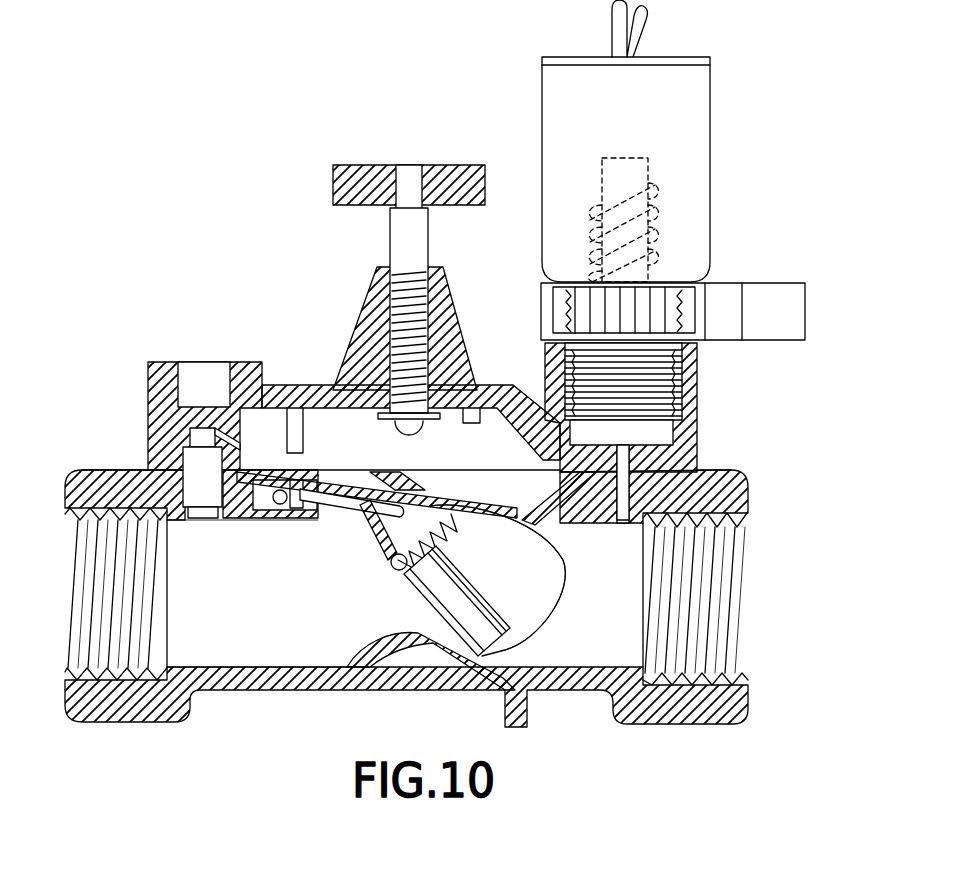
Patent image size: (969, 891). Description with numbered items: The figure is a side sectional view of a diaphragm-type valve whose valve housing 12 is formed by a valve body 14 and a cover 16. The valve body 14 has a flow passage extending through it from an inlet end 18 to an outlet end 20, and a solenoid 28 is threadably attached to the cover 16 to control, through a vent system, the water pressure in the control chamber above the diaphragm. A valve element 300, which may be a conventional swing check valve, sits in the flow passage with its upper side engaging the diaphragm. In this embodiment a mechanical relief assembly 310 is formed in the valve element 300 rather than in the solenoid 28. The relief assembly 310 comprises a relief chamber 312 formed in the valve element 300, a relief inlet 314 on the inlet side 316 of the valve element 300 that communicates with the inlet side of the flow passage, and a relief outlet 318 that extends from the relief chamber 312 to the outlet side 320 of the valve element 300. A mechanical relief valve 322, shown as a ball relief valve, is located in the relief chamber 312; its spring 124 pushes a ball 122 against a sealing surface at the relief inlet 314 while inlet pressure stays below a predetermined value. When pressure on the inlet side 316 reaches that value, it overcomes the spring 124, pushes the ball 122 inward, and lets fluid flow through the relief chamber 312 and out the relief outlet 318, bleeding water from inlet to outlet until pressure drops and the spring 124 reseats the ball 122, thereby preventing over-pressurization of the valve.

The valve housing 12 is at (92, 389).
The valve body 14 is at (78, 472).
The cover 16 is at (250, 368).
The inlet end 18 is at (75, 578).
The outlet end 20 is at (735, 578).
The solenoid 28 is at (705, 88).
The ball 122 is at (402, 573).
The spring 124 is at (437, 515).
The valve element 300 is at (550, 560).
The mechanical relief assembly 310 is at (281, 618).
The relief chamber 312 is at (385, 525).
The relief inlet 314 is at (392, 566).
The inlet side 316 is at (305, 575).
The relief outlet 318 is at (497, 613).
The outlet side 320 is at (541, 634).
The mechanical relief valve 322 is at (467, 550).